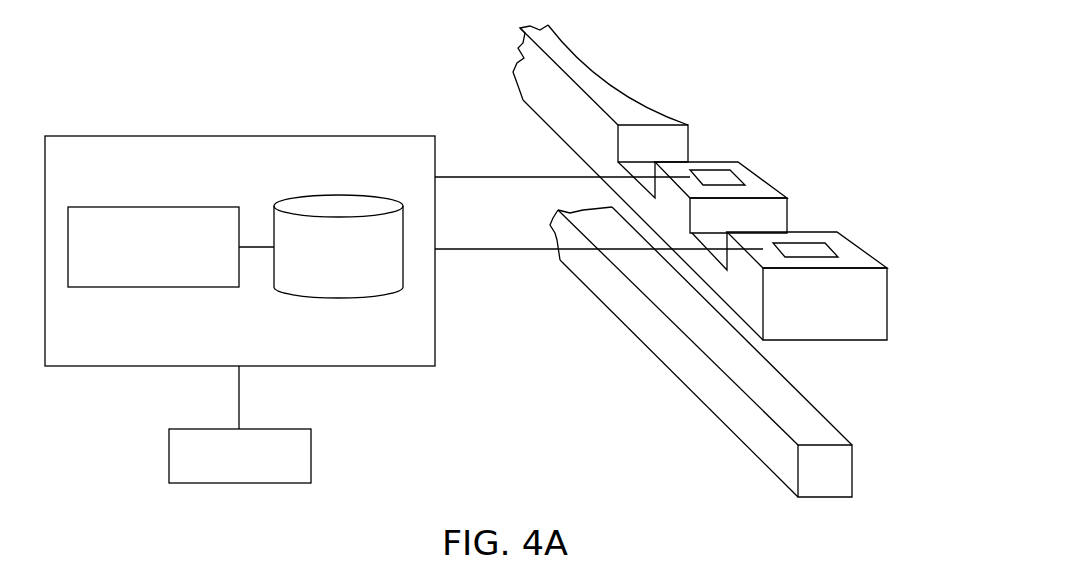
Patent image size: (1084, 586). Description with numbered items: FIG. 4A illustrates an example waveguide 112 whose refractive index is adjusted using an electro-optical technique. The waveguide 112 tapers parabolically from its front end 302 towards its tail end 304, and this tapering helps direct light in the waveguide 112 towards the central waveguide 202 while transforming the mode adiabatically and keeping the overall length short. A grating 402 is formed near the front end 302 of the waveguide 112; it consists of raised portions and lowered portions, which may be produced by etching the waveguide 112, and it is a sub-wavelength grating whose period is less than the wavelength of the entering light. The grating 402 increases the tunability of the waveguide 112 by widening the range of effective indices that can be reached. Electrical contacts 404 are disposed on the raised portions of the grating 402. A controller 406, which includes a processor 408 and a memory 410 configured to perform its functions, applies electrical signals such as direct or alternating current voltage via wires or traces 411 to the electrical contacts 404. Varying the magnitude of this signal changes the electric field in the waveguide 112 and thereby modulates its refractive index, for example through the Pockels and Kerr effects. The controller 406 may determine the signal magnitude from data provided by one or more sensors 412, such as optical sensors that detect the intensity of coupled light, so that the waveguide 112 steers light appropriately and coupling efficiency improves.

The waveguide 112 is at (603, 83).
The central waveguide 202 is at (853, 460).
The front end 302 is at (888, 295).
The tail end 304 is at (512, 57).
The grating 402 is at (712, 157).
The electrical contacts 404 is at (738, 172).
The controller 406 is at (155, 136).
The processor 408 is at (153, 287).
The memory 410 is at (370, 298).
The wires or traces 411 is at (490, 177).
The sensors 412 is at (312, 455).